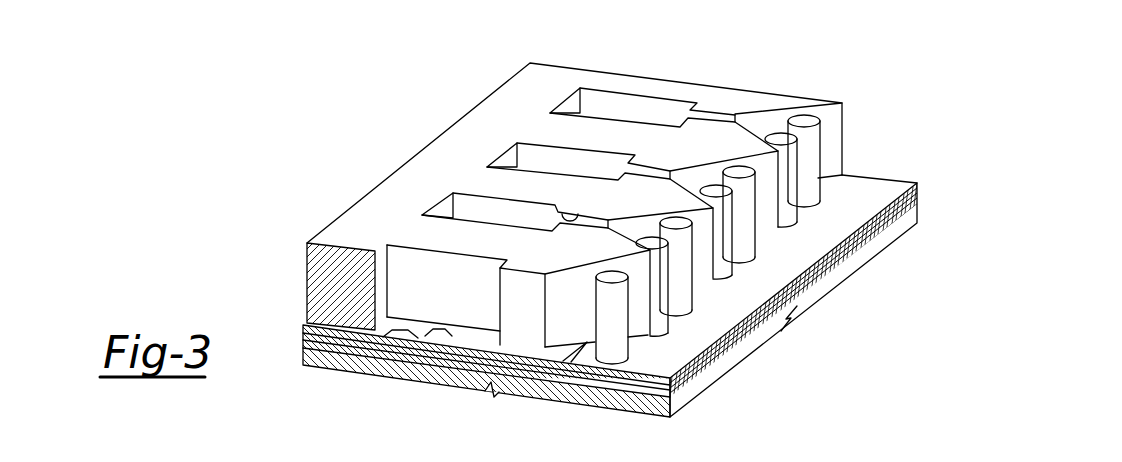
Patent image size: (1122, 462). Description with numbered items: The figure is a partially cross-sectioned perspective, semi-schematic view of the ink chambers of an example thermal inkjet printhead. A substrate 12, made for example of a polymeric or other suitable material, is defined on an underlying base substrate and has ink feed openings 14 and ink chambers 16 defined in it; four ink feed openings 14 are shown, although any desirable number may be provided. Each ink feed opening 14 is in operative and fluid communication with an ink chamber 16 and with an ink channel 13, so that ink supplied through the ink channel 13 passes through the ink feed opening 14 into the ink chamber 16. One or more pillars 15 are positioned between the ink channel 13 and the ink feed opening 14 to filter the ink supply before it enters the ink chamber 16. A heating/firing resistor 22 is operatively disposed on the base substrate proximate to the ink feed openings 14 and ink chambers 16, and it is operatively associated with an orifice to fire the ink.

The substrate 12 is at (364, 228).
The ink channel 13 is at (860, 194).
The ink feed opening 14 is at (572, 219).
The pillars 15 is at (676, 270).
The ink chamber 16 is at (446, 205).
The heating/firing resistor 22 is at (427, 332).